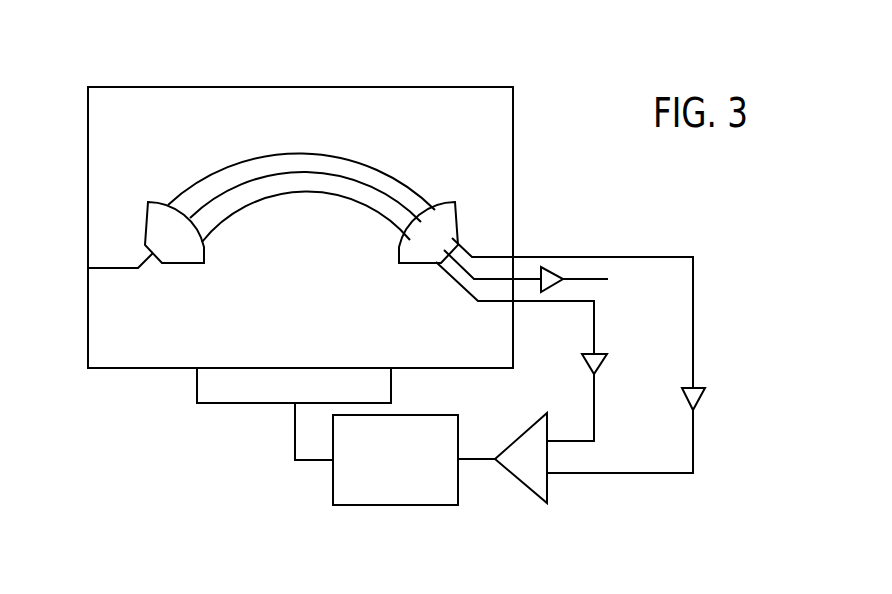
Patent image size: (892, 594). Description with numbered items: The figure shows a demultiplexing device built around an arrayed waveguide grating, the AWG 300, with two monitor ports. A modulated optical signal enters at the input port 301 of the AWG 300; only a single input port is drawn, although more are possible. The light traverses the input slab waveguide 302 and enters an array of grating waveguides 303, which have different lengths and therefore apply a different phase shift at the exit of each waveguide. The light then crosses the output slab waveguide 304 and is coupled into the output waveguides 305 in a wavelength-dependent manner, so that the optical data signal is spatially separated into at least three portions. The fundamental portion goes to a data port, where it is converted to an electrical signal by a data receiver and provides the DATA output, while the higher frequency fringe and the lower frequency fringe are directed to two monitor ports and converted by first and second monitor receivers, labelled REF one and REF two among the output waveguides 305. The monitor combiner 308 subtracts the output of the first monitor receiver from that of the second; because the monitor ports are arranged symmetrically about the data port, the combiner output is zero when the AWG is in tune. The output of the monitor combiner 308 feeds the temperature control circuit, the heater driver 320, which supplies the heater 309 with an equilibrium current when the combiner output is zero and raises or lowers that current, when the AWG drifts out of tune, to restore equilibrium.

The AWG 300 is at (513, 120).
The input port 301 is at (100, 267).
The input slab waveguide 302 is at (178, 265).
The grating waveguides 303 is at (243, 160).
The output slab waveguide 304 is at (413, 263).
The output waveguides 305 is at (668, 280).
The monitor combiner 308 is at (547, 487).
The heater 309 is at (235, 403).
The heater driver (temperature control circuit) 320 is at (358, 505).